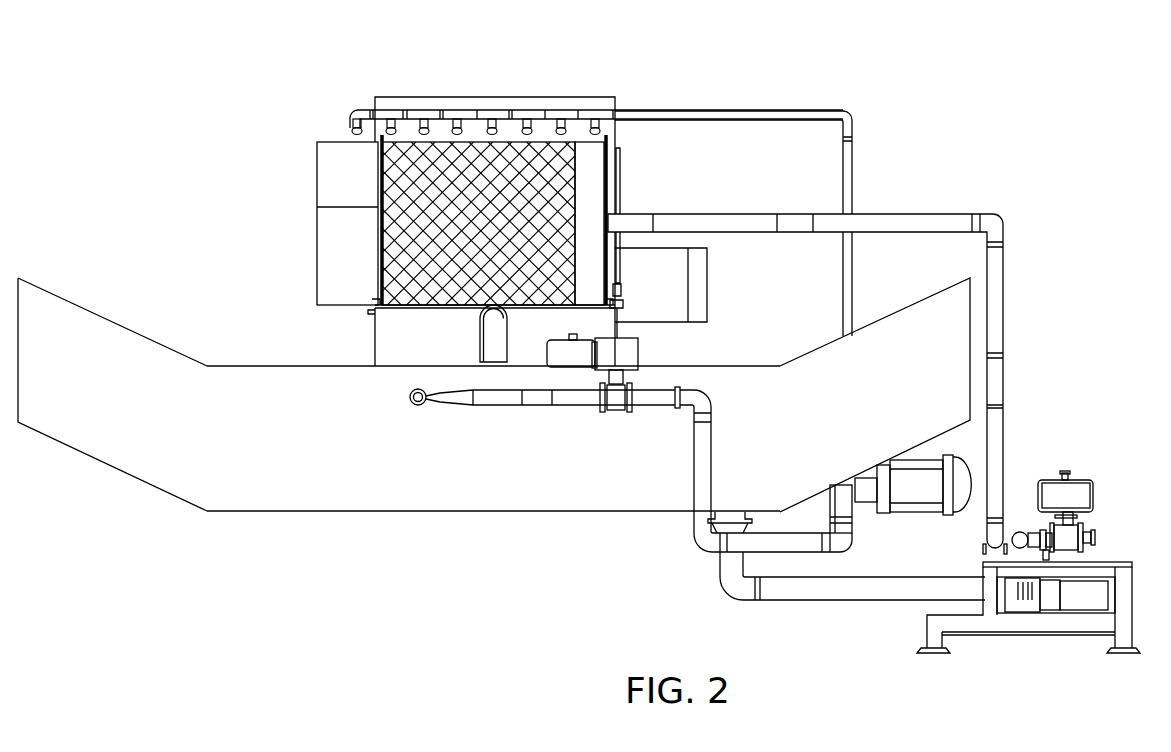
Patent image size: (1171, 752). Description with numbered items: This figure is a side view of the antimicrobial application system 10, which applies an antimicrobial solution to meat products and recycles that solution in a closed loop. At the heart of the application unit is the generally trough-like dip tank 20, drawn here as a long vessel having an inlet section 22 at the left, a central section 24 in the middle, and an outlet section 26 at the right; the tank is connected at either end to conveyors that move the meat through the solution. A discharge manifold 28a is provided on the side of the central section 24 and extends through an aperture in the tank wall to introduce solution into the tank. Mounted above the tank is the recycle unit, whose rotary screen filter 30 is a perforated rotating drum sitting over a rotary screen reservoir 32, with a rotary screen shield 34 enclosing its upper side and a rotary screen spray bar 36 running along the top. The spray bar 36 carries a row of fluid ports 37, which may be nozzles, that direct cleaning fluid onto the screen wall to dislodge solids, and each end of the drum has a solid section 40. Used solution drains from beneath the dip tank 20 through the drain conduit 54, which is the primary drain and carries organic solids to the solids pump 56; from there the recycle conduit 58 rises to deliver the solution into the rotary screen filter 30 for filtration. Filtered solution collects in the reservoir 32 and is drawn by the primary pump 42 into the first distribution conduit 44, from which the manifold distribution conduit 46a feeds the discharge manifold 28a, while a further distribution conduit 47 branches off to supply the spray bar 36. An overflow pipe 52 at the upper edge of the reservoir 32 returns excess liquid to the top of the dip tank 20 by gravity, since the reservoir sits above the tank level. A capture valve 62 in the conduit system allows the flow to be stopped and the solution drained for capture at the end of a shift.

The antimicrobial application system 10 is at (264, 78).
The dip tank 20 is at (551, 466).
The inlet section 22 is at (69, 425).
The central section 24 is at (294, 493).
The outlet section 26 is at (945, 383).
The discharge manifold 28a is at (457, 398).
The rotary screen filter 30 is at (543, 200).
The rotary screen reservoir 32 is at (375, 350).
The rotary screen shield 34 is at (543, 97).
The rotary screen spray bar 36 is at (473, 102).
The fluid ports 37 is at (356, 110).
The solid section 40 is at (330, 175).
The primary pump 42 is at (937, 503).
The first distribution conduit 44 is at (855, 528).
The manifold distribution conduit 46a is at (617, 405).
The further distribution conduit 47 is at (853, 178).
The overflow pipe 52 is at (490, 330).
The drain conduit 54 is at (712, 530).
The solids pump 56 is at (1090, 540).
The recycle conduit 58 is at (750, 214).
The capture valve 62 is at (640, 352).